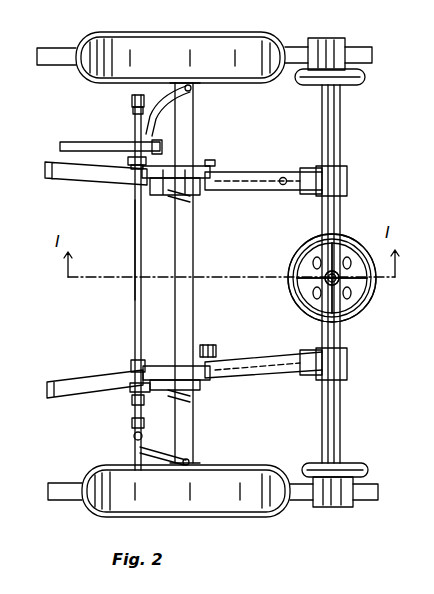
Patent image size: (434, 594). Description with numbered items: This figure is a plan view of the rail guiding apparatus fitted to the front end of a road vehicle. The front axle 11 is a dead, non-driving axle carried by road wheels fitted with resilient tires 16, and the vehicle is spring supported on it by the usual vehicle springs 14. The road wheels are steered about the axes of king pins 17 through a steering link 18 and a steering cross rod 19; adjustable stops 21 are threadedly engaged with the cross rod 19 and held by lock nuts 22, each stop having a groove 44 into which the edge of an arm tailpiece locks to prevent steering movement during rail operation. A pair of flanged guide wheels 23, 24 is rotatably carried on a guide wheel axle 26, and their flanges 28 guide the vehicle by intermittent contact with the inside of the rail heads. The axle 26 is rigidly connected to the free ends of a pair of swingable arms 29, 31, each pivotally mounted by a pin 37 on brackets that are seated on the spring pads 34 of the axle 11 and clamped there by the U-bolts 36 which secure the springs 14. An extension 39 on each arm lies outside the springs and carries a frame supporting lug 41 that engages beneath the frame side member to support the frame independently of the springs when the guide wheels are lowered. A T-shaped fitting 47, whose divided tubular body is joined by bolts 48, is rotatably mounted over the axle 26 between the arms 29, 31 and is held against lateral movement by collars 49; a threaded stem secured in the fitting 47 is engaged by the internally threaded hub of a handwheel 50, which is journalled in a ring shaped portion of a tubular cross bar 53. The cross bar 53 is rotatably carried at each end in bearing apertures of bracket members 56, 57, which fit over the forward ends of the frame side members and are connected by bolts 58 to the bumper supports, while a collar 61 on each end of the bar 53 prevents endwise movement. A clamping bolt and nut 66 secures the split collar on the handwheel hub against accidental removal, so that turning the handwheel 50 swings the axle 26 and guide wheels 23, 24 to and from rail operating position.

The front axle 11 is at (192, 244).
The vehicle springs 14 is at (110, 178).
The resilient tires 16 is at (86, 70).
The king pins 17 is at (196, 92).
The steering link 18 is at (80, 148).
The steering cross rod 19 is at (136, 305).
The adjustable stops 21 is at (178, 164).
The lock nuts 22 is at (128, 160).
The flanged guide wheel 23 is at (326, 500).
The flanged guide wheel 24 is at (325, 52).
The guide wheel axle 26 is at (341, 125).
The flanges 28 is at (310, 82).
The swingable arm 29 is at (290, 392).
The swingable arm 31 is at (290, 178).
The spring pads 34 is at (198, 200).
The U-bolts 36 is at (175, 196).
The pin 37 is at (208, 347).
The extension 39 is at (212, 170).
The frame supporting lug 41 is at (135, 364).
The groove 44 is at (131, 390).
The T-shaped fitting 47 is at (352, 310).
The bolts 48 is at (298, 252).
The collars 49 is at (318, 305).
The handwheel 50 is at (298, 284).
The cross bar 53 is at (328, 214).
The bracket member 56 is at (284, 372).
The bracket member 57 is at (308, 192).
The bolts 58 is at (280, 190).
The collar 61 is at (348, 368).
The clamping bolt and nut 66 is at (342, 284).